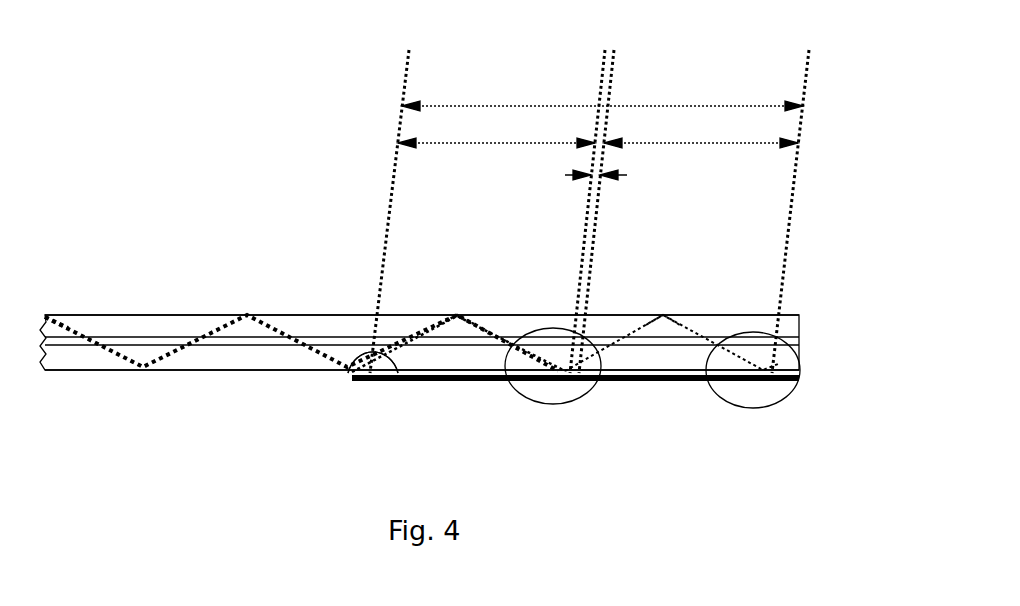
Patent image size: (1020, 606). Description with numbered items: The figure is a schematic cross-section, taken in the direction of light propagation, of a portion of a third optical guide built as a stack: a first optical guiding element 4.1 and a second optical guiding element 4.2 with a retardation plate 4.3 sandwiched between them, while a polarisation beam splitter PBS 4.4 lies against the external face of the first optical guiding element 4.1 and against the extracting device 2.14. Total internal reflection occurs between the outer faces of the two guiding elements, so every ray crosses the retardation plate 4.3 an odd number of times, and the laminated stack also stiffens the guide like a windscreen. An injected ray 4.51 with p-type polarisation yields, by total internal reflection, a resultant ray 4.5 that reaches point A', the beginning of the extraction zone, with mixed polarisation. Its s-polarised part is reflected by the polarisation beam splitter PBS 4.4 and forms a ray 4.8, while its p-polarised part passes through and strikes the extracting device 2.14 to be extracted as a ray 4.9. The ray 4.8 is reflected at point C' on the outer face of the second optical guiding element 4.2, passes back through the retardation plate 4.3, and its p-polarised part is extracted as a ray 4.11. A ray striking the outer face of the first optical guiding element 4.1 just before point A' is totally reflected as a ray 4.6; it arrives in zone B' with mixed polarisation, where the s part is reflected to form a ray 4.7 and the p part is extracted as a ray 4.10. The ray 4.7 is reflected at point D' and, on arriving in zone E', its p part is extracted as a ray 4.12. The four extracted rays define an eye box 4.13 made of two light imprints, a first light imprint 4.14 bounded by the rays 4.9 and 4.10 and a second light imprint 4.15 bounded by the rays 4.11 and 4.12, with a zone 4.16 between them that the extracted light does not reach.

The first optical guiding element 4.1 is at (87, 372).
The second optical guiding element 4.2 is at (156, 315).
The retardation plate 4.3 is at (800, 340).
The polarisation beam splitter PBS 4.4 is at (800, 373).
The resultant ray 4.5 is at (167, 372).
The ray 4.51 is at (68, 318).
The ray 4.6 is at (422, 328).
The ray 4.7 is at (627, 323).
The ray 4.8 is at (388, 374).
The ray 4.9 is at (407, 70).
The ray 4.10 is at (600, 68).
The ray 4.11 is at (615, 70).
The ray 4.12 is at (807, 77).
The eye box 4.13 is at (458, 106).
The light imprint 4.14 is at (482, 143).
The light imprint 4.15 is at (733, 143).
The zone 4.16 is at (593, 182).
The extracting device 2.14 is at (667, 383).
The point A' is at (350, 389).
The zone B' is at (553, 387).
The point C' is at (468, 294).
The point D' is at (673, 293).
The zone E' is at (753, 396).